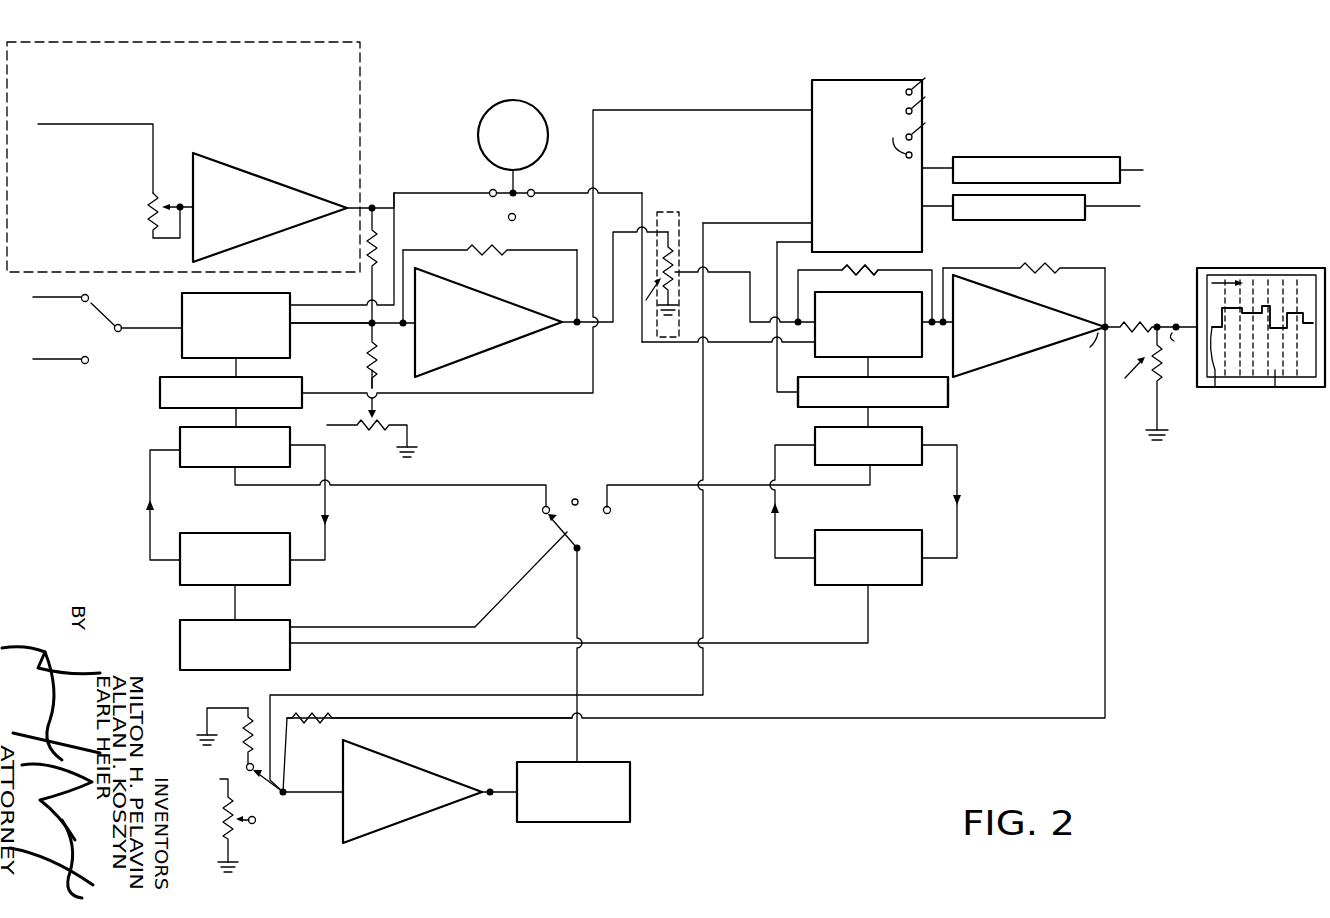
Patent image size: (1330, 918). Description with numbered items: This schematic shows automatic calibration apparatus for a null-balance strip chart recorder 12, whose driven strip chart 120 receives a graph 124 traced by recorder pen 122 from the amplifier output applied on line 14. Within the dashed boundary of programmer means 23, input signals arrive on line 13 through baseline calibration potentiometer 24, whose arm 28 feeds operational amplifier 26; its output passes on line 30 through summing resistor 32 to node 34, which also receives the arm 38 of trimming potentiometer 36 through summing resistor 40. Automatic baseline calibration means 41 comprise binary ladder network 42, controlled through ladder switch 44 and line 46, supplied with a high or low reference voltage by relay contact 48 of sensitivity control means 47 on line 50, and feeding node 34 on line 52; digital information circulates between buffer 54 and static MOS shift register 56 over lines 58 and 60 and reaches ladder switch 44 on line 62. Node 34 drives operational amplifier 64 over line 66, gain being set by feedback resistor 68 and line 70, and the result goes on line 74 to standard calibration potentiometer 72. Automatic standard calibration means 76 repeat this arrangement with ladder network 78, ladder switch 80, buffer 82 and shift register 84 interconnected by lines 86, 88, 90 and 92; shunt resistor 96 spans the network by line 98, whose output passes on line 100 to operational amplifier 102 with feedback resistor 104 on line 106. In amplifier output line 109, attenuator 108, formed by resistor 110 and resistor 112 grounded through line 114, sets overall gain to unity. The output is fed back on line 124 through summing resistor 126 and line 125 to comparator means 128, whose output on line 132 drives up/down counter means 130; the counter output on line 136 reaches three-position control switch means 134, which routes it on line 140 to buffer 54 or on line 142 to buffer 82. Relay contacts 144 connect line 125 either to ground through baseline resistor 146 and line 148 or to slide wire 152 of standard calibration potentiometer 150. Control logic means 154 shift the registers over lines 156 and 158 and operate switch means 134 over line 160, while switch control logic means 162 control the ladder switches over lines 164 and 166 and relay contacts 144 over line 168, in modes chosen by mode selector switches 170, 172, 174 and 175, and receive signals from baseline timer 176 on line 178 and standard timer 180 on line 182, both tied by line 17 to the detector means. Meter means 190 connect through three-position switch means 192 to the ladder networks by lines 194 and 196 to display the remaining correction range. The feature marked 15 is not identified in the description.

The strip chart recorder 12 is at (1241, 268).
The signal input line 13 is at (113, 125).
The line 14 is at (1178, 322).
The feedback line 15 is at (772, 732).
The line 17 is at (1118, 192).
The programmer means 23 is at (362, 124).
The baseline calibration potentiometer 24 is at (146, 210).
The operational amplifier 26 is at (302, 190).
The arm 28 is at (186, 230).
The line 30 is at (386, 198).
The summing resistor 32 is at (366, 253).
The node 34 is at (352, 331).
The trimming potentiometer 36 is at (387, 426).
The potentiometer arm 38 is at (376, 397).
The summing resistor 40 is at (366, 357).
The automatic baseline calibration means 41 is at (93, 442).
The binary ladder network 42 is at (227, 297).
The ladder switch 44 is at (158, 402).
The line 46 is at (248, 369).
The sensitivity control means 47 is at (60, 367).
The two-position relay contact 48 is at (90, 300).
The line 50 is at (148, 330).
The line 52 is at (358, 326).
The buffer 54 is at (180, 437).
The static MOS shift register 56 is at (227, 533).
The line 58 is at (151, 481).
The line 60 is at (327, 498).
The line 62 is at (230, 418).
The operational amplifier 64 is at (500, 345).
The line 66 is at (418, 197).
The feedback resistor 68 is at (478, 250).
The line 70 is at (548, 250).
The standard calibration potentiometer 72 is at (662, 284).
The line 74 is at (612, 325).
The automatic standard calibration means 76 is at (973, 405).
The ladder network 78 is at (928, 344).
The electronic ladder switch 80 is at (948, 392).
The buffer 82 is at (925, 435).
The static MOS shift register 84 is at (905, 588).
The line 86 is at (860, 367).
The line 88 is at (857, 418).
The line 90 is at (777, 530).
The line 92 is at (958, 478).
The shunt resistor 96 is at (853, 268).
The line 98 is at (933, 270).
The line 100 is at (938, 333).
The operational amplifier 102 is at (1063, 318).
The feedback resistor 104 is at (1042, 265).
The line 106 is at (1087, 268).
The voltage divider 108 is at (1134, 383).
The amplifier output line 109 is at (1161, 316).
The resistor 110 is at (1130, 320).
The resistor 112 is at (1159, 384).
The line 114 is at (1176, 443).
The strip chart 120 is at (1278, 390).
The recorder pen 122 is at (1222, 390).
The graph / feedback line 124 is at (1288, 300).
The line 125 is at (325, 797).
The summing resistor 126 is at (313, 730).
The comparator means 128 is at (425, 812).
The up/down counter means 130 is at (590, 825).
The line 132 is at (498, 797).
The three-position calibration network control switch means 134 is at (568, 534).
The line 136 is at (579, 606).
The line 140 is at (475, 485).
The line 142 is at (640, 485).
The relay contacts 144 is at (272, 796).
The baseline resistor 146 is at (242, 739).
The line 148 is at (218, 708).
The standard calibration potentiometer 150 is at (214, 827).
The slide wire 152 is at (251, 825).
The control logic means 154 is at (258, 620).
The line 156 is at (233, 603).
The line 158 is at (815, 645).
The line 160 is at (440, 625).
The switch control logic means 162 is at (812, 93).
The line 164 is at (680, 92).
The line 166 is at (777, 360).
The line 168 is at (760, 200).
The mode selector switch 170 is at (933, 74).
The mode selector switch 172 is at (924, 105).
The mode selector switch 174 is at (924, 135).
The mode selector switch 175 is at (899, 137).
The baseline timer 176 is at (1017, 155).
The line 178 is at (942, 156).
The standard timer 180 is at (1052, 221).
The line 182 is at (922, 220).
The meter means 190 is at (541, 112).
The three-position switch means 192 is at (506, 190).
The line 194 is at (686, 275).
The line 196 is at (665, 343).